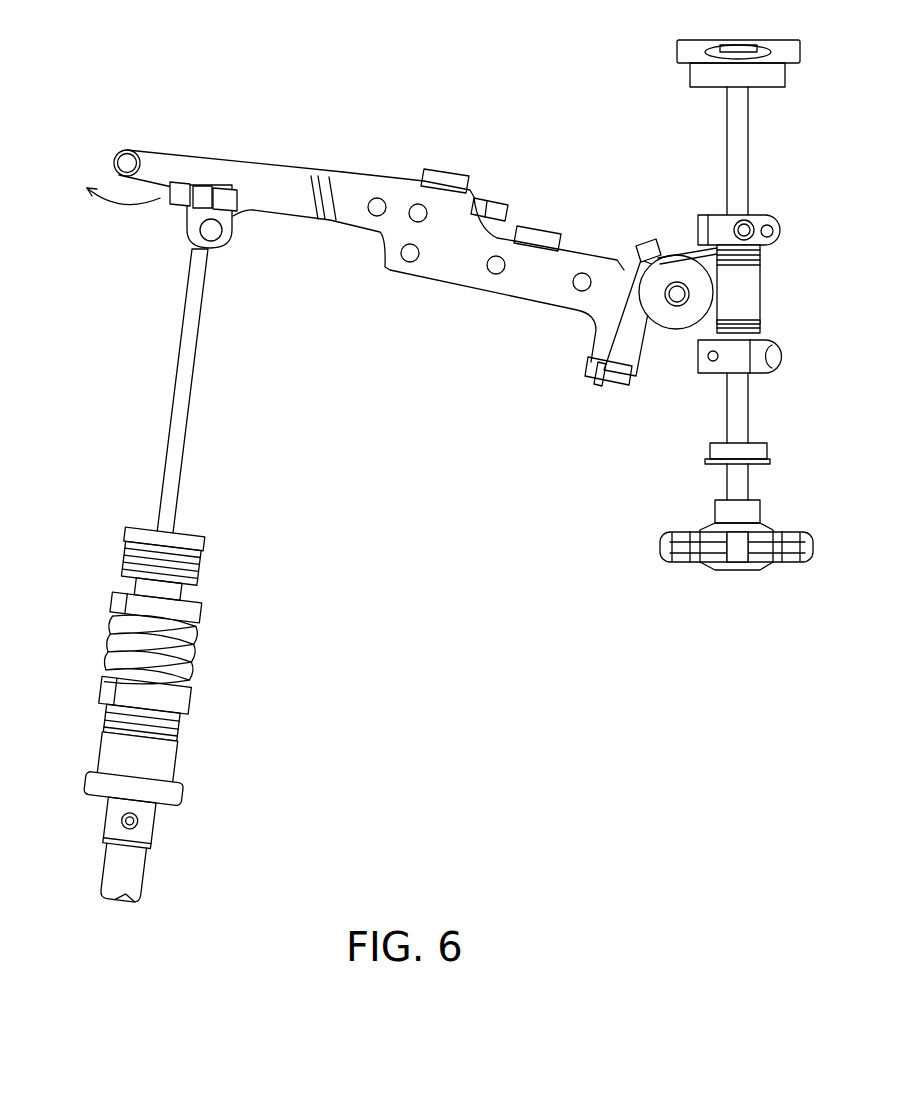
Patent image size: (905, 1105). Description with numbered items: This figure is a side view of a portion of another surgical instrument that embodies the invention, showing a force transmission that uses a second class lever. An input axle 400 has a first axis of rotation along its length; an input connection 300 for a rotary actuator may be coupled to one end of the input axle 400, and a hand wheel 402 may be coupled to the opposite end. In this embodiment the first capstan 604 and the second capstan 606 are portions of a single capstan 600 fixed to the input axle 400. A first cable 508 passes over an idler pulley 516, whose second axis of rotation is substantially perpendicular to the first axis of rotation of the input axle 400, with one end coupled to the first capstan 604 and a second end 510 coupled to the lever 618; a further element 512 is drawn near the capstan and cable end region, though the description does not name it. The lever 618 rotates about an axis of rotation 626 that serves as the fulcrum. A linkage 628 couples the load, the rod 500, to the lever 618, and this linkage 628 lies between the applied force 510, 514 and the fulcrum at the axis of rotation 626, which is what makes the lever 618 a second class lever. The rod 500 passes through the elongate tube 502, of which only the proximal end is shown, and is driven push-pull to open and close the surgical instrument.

The input connection 300 is at (677, 45).
The input axle 400 is at (722, 412).
The hand wheel 402 is at (735, 563).
The rod 500 is at (162, 473).
The elongate tube 502 is at (107, 873).
The first cable 508 is at (700, 338).
The second end of first cable 510 is at (638, 247).
The link plate 512 is at (697, 252).
The applied force 514 is at (590, 368).
The idler pulley 516 is at (657, 323).
The single capstan 600 is at (760, 307).
The first capstan 604 is at (757, 333).
The second capstan 606 is at (760, 260).
The lever 618 is at (358, 173).
The axis of rotation 626 is at (127, 163).
The linkage 628 is at (199, 188).